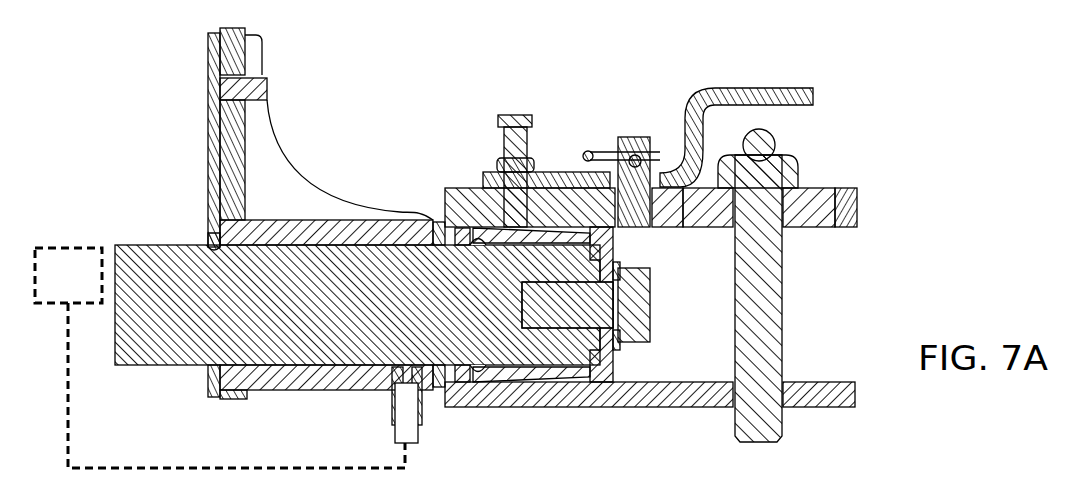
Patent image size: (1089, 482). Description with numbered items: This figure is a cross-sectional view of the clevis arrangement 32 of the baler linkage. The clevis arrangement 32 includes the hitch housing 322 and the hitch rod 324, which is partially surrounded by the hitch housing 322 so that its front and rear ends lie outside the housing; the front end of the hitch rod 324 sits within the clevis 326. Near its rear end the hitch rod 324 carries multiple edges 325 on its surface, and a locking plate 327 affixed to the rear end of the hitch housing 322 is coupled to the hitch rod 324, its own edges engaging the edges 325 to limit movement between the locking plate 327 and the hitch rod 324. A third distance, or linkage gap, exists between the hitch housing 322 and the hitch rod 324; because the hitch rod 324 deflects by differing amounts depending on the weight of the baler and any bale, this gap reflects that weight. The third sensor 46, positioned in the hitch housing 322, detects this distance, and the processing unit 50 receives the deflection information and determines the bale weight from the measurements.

The clevis arrangement 32 is at (465, 62).
The clevis 326 is at (672, 85).
The locking plate 327 is at (212, 145).
The edges 325 is at (207, 236).
The hitch rod 324 is at (187, 366).
The hitch housing 322 is at (343, 392).
The third sensor 46 is at (407, 428).
The processing unit 50 is at (55, 290).